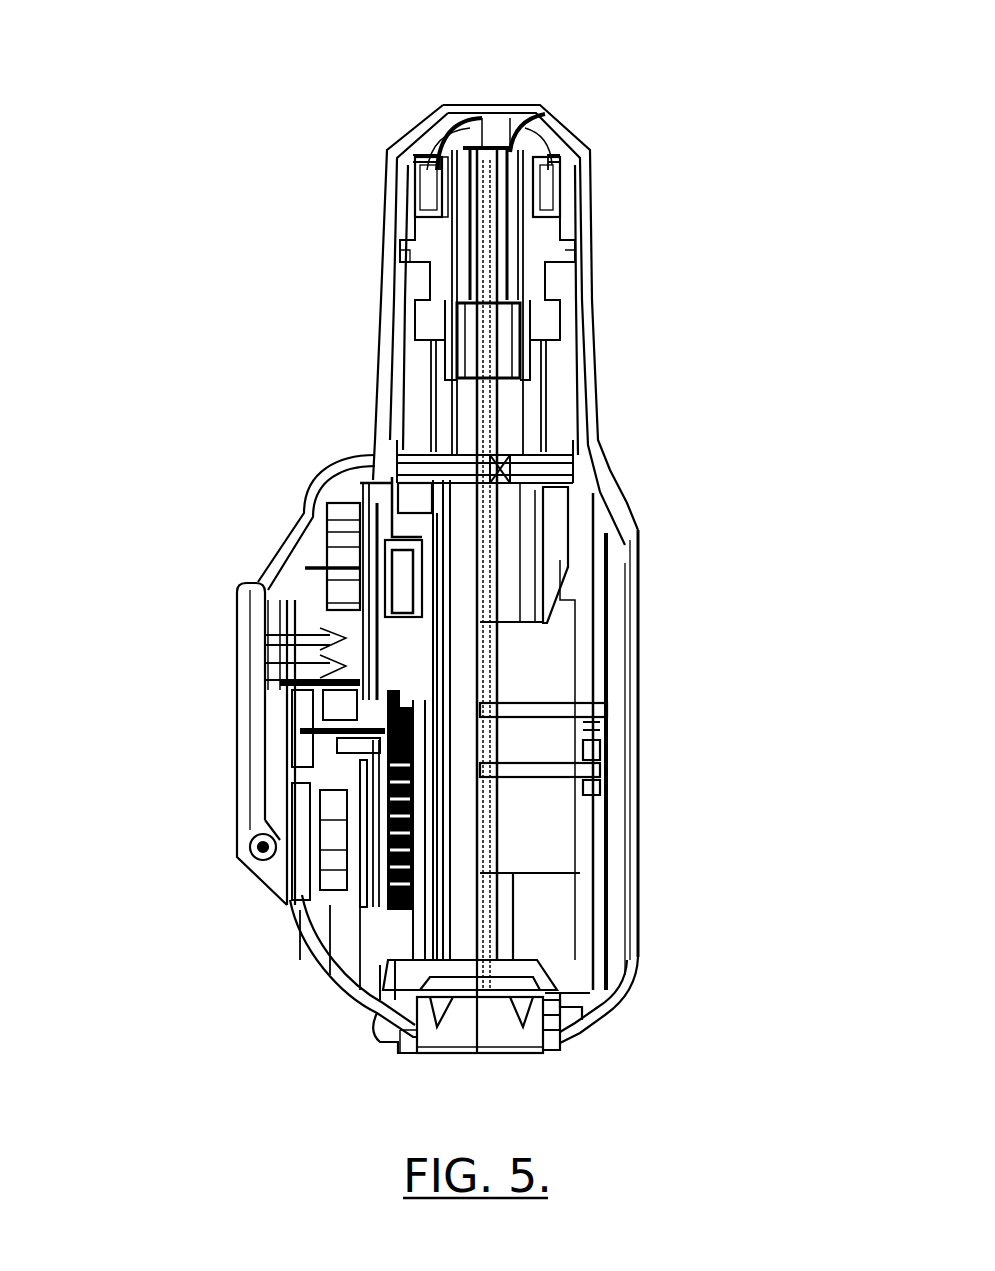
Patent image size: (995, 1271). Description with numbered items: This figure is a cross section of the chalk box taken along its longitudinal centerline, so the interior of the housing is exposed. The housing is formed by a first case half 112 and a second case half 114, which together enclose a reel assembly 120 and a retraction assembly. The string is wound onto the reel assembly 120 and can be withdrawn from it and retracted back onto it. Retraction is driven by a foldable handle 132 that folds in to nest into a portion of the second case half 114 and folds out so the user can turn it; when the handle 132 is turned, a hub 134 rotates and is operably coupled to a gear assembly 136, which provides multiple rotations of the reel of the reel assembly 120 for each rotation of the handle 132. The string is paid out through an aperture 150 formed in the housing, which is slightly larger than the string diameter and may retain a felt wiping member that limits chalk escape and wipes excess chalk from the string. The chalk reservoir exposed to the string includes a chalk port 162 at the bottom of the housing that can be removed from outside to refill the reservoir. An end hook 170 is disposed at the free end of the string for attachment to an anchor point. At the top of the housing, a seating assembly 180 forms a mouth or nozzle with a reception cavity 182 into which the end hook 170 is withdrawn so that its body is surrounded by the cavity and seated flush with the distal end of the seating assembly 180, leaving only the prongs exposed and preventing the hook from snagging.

The first case half 112 is at (625, 972).
The second case half 114 is at (382, 1012).
The reel assembly 120 is at (612, 820).
The foldable handle 132 is at (255, 678).
The hub 134 is at (293, 905).
The gear assembly 136 is at (383, 907).
The aperture 150 is at (507, 384).
The chalk port 162 is at (499, 1027).
The end hook 170 is at (440, 113).
The seating assembly 180 is at (614, 200).
The reception cavity 182 is at (507, 128).